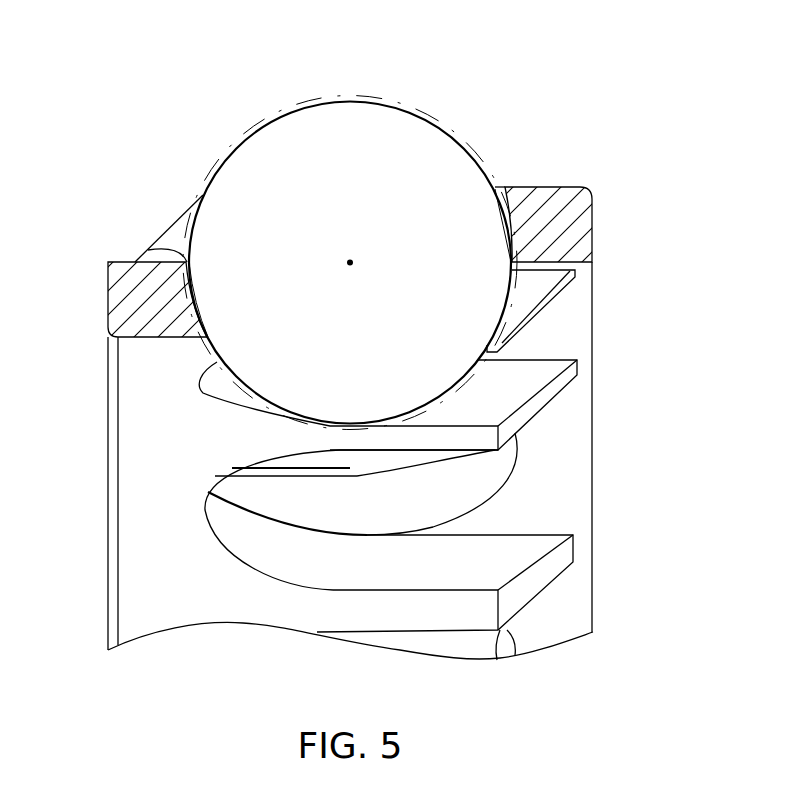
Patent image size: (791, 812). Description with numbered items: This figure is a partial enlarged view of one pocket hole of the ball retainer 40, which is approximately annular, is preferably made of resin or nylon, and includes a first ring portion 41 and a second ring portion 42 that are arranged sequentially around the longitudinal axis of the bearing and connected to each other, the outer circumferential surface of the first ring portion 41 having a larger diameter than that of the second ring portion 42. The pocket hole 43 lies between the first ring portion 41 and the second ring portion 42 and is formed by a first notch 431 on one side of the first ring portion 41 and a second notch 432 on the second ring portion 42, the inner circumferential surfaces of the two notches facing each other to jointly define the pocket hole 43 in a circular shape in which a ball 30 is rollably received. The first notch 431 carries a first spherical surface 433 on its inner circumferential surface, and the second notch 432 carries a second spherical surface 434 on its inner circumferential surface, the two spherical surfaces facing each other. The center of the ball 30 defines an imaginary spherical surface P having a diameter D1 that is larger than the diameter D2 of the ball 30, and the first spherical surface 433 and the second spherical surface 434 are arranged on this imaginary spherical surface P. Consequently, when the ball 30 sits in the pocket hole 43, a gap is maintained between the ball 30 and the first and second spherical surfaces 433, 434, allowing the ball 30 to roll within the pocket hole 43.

The ball 30 is at (240, 148).
The ball retainer 40 is at (560, 187).
The first ring portion 41 is at (577, 217).
The second ring portion 42 is at (128, 316).
The pocket hole 43 is at (222, 390).
The first notch 431 is at (503, 189).
The second notch 432 is at (186, 250).
The first spherical surface 433 is at (518, 233).
The second spherical surface 434 is at (183, 292).
The imaginary spherical surface P is at (319, 100).
The diameter of the imaginary spherical surface D1 is at (195, 303).
The diameter of the ball D2 is at (508, 290).